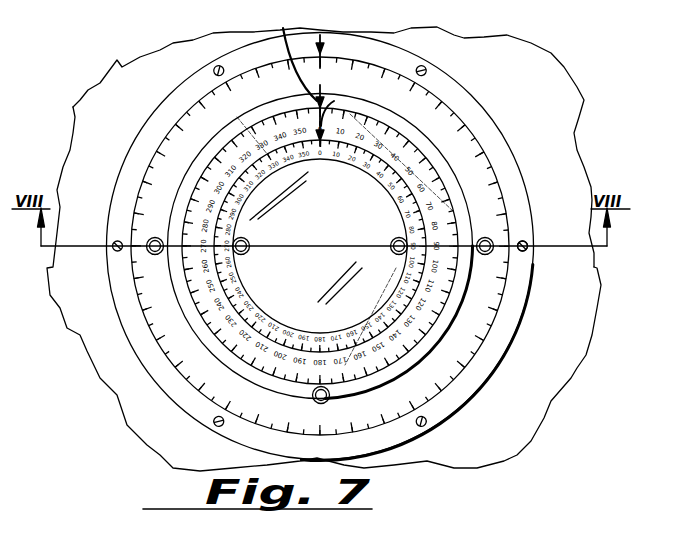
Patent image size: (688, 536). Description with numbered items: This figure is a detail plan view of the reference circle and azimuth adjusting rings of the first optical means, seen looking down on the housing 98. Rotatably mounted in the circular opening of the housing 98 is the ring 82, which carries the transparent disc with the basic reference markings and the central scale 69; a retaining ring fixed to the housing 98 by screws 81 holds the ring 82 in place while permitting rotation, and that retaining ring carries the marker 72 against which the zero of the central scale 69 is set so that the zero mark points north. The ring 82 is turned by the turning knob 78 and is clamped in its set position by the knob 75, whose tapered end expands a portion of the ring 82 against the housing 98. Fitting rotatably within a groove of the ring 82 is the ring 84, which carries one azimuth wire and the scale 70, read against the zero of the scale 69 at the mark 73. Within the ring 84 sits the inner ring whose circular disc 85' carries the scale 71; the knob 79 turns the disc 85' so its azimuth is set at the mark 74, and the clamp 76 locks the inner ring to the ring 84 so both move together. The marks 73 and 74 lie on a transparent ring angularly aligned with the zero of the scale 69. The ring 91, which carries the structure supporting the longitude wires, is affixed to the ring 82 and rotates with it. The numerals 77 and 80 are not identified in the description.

The central scale 69 is at (487, 170).
The scale 70 is at (454, 281).
The scale 71 is at (454, 318).
The marker 72 is at (346, 28).
The marking 73 is at (299, 67).
The marking 74 is at (334, 101).
The knob 75 is at (150, 254).
The clamp 76 is at (247, 253).
The ring rim 77 is at (349, 395).
The turning knob 78 is at (492, 238).
The knob 79 is at (392, 242).
The bezel 80 is at (534, 248).
The screws 81 is at (112, 246).
The ring 82 is at (501, 203).
The ring 84 is at (452, 163).
The circular disc 85' is at (320, 246).
The ring 91 is at (461, 97).
The housing 98 is at (120, 371).